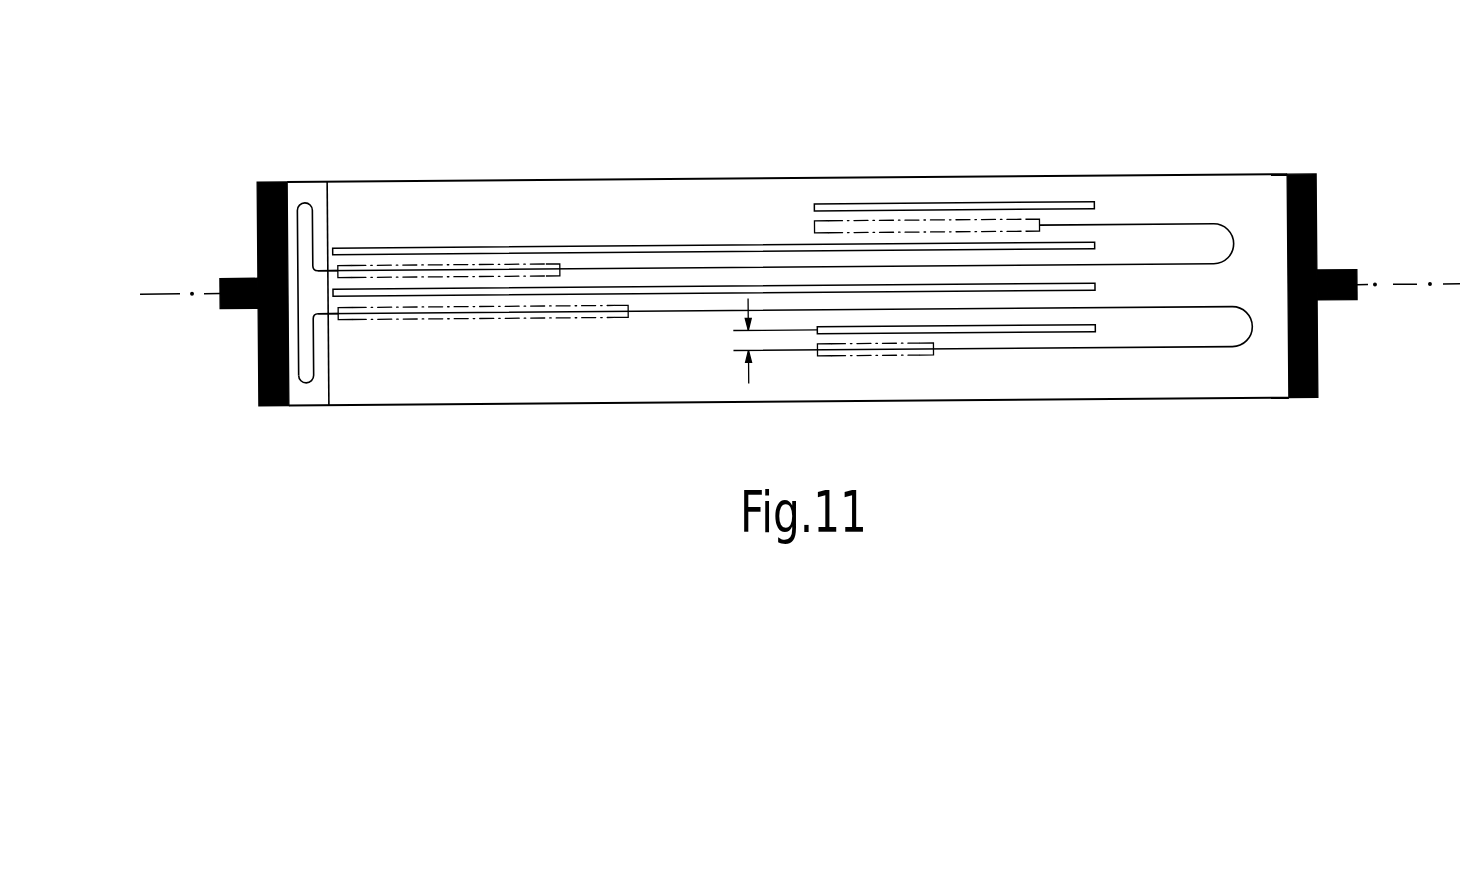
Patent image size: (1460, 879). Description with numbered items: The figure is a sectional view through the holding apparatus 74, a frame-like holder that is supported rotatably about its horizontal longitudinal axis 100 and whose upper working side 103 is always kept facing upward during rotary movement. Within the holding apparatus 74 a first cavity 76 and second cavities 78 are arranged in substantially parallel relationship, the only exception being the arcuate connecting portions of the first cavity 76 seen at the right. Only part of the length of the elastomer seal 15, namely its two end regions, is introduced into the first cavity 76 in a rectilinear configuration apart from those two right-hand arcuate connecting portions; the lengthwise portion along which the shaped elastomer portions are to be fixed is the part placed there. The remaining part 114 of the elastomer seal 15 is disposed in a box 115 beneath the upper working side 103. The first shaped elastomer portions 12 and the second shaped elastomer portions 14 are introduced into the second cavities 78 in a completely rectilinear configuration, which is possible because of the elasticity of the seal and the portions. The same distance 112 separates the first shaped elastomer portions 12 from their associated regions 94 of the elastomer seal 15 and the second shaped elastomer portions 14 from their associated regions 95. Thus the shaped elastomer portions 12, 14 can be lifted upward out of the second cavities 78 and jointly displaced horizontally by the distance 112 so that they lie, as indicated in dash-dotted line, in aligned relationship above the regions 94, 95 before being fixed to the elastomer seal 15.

The first shaped elastomer portion 12 is at (613, 305).
The second shaped elastomer portion 14 is at (988, 221).
The elastomer seal 15 is at (1153, 226).
The holding apparatus 74 is at (1318, 401).
The first cavity 76 is at (1216, 229).
The second cavity 78 is at (747, 244).
The region of the elastomer seal 94 is at (654, 262).
The region of the elastomer seal 95 is at (1062, 228).
The horizontal longitudinal axis 100 is at (208, 290).
The upper working side 103 is at (410, 379).
The distance 112 is at (735, 341).
The remaining part of the elastomer seal 114 is at (305, 199).
The box 115 is at (307, 388).